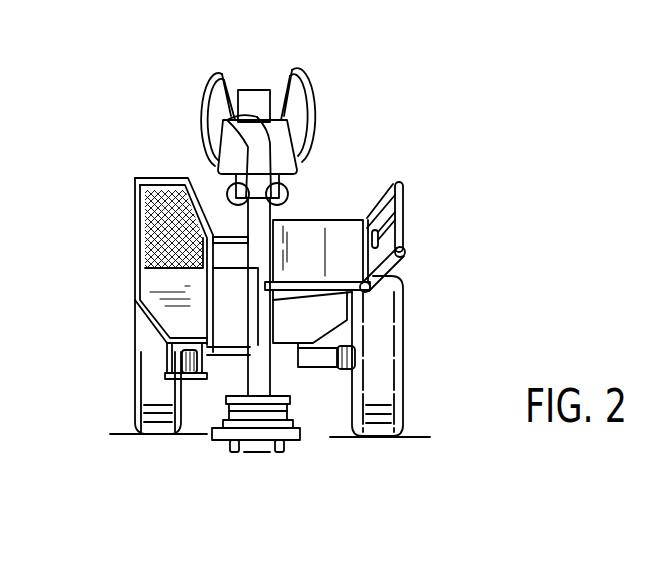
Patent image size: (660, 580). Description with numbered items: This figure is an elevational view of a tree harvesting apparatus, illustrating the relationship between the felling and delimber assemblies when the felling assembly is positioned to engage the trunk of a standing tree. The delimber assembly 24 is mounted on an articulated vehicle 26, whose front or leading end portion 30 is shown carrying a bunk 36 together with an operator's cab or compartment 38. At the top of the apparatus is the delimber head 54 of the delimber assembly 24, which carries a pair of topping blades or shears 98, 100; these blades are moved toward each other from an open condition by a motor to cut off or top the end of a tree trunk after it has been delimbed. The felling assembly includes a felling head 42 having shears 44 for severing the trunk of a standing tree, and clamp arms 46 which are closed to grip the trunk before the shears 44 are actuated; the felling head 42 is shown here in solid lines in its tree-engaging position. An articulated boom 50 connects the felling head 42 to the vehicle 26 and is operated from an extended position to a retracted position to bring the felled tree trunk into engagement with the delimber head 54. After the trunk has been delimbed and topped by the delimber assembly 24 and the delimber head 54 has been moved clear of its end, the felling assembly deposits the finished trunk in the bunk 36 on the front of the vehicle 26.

The delimber assembly 24 is at (267, 106).
The articulated vehicle 26 is at (160, 287).
The front or leading end portion 30 is at (326, 313).
The bunk 36 is at (337, 226).
The operator's cab or compartment 38 is at (135, 250).
The felling head 42 is at (258, 447).
The shears 44 is at (292, 452).
The clamp arms 46 is at (300, 426).
The articulated boom 50 is at (276, 363).
The delimber head 54 is at (340, 115).
The topping blade or shear 98 is at (294, 103).
The topping blade or shear 100 is at (222, 98).